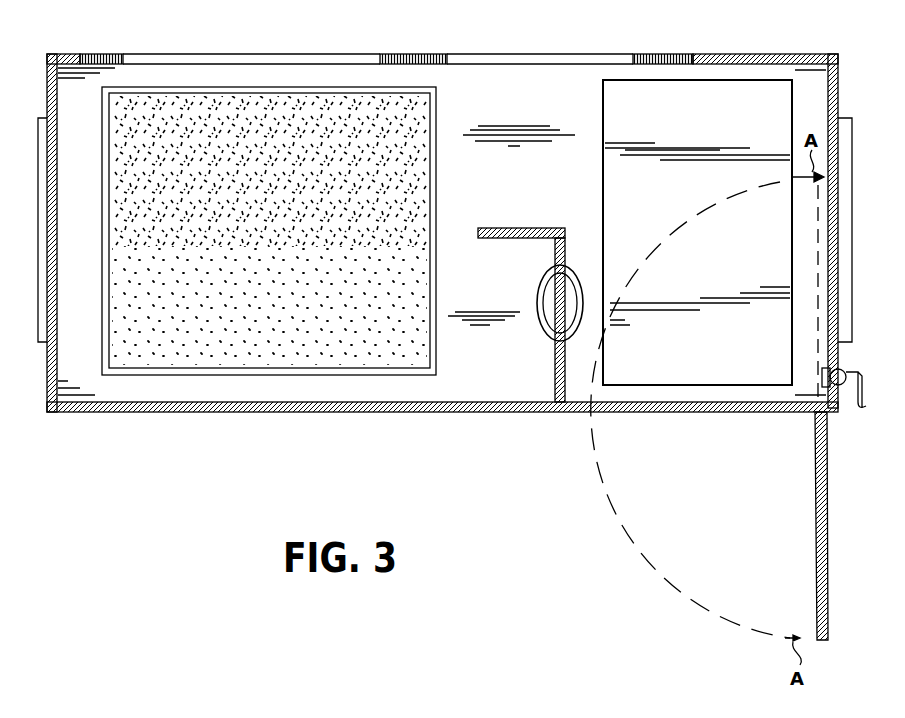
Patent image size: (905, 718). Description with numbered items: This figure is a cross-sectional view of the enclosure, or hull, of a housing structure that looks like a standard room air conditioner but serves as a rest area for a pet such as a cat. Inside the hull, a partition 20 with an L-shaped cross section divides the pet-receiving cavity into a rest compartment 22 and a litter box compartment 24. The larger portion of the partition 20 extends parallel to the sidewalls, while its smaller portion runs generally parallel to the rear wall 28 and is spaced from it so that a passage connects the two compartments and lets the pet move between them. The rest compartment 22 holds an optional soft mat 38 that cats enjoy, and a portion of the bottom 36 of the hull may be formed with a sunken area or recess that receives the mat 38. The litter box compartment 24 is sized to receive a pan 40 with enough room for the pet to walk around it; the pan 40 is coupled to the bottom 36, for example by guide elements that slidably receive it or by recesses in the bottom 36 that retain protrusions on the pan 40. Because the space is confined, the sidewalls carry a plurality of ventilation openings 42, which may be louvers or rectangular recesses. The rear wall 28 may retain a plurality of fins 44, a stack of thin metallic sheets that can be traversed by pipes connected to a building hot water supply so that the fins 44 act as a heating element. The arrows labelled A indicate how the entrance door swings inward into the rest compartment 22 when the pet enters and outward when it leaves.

The partition 20 is at (513, 228).
The rest compartment 22 is at (812, 78).
The litter box compartment 24 is at (87, 88).
The rear wall 28 is at (727, 55).
The bottom 36 is at (322, 412).
The mat 38 is at (690, 375).
The pan 40 is at (262, 86).
The openings 42 is at (45, 343).
The fins 44 is at (425, 55).